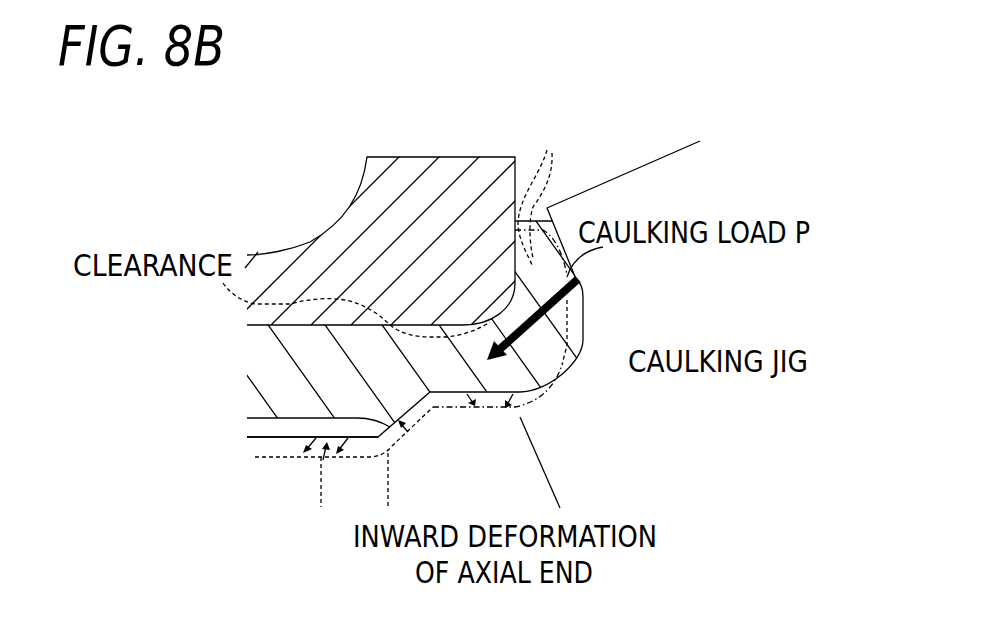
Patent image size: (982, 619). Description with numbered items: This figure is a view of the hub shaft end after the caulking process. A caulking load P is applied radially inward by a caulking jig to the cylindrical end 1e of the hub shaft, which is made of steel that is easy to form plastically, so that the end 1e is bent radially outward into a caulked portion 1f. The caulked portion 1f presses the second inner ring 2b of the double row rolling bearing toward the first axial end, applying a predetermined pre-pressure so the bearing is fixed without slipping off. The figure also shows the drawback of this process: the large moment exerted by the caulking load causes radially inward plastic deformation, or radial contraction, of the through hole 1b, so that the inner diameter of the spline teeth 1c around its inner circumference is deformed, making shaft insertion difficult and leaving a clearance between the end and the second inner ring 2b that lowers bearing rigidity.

The second inner ring 2b is at (414, 243).
The caulked portion 1f is at (562, 241).
The end of the hub shaft 1e is at (535, 208).
The spline teeth 1c is at (268, 430).
The through hole 1b is at (282, 460).